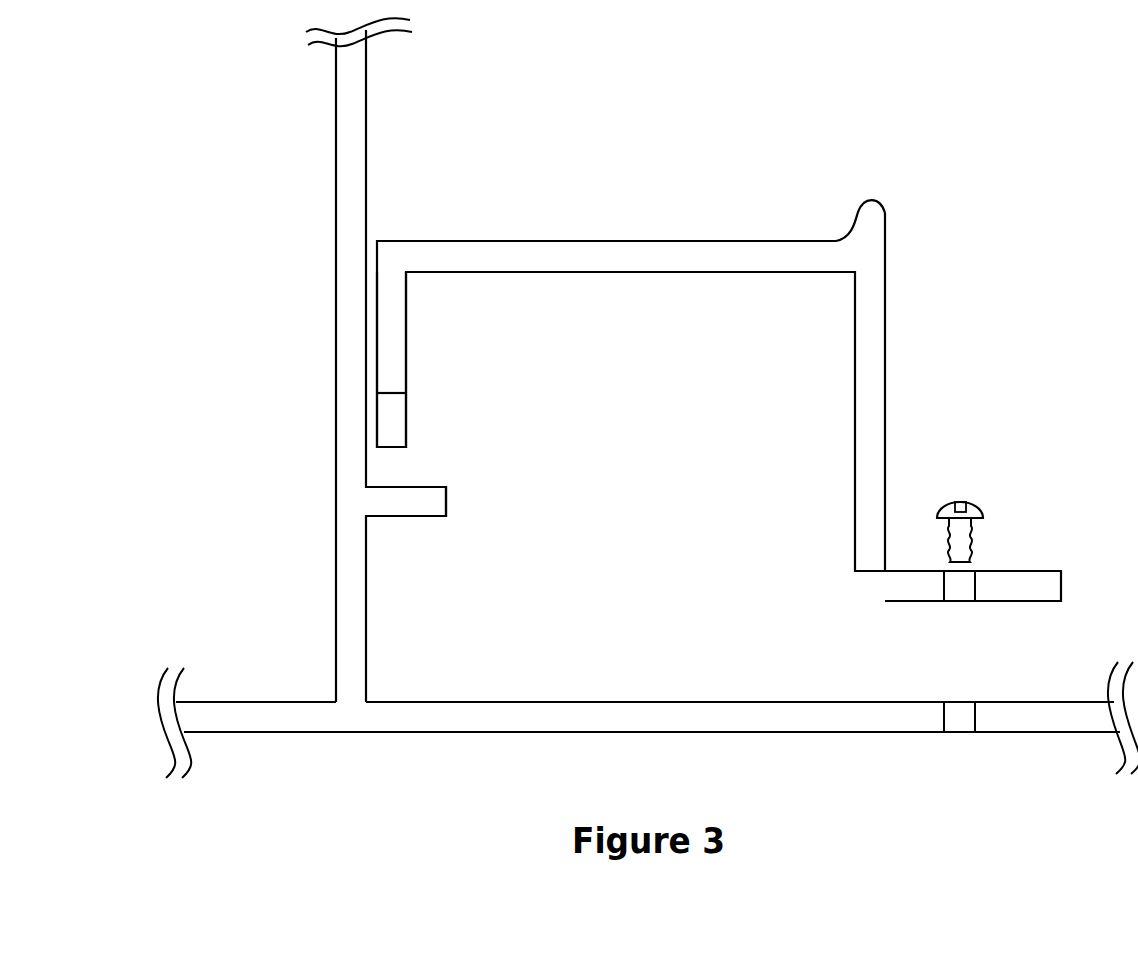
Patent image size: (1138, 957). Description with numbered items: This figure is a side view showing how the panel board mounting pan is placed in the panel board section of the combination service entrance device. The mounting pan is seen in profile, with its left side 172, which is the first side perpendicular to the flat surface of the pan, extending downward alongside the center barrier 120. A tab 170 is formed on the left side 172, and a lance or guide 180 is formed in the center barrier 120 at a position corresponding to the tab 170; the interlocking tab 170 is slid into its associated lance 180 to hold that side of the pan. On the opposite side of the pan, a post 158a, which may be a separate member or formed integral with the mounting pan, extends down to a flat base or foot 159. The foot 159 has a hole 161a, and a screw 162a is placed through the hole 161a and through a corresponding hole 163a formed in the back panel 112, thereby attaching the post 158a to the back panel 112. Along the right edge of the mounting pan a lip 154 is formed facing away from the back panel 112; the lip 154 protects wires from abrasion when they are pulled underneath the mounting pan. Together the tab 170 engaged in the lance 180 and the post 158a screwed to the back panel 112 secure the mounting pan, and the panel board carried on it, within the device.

The back panel 112 is at (426, 701).
The center barrier 120 is at (351, 140).
The lip 154 is at (877, 200).
The post 158a is at (886, 343).
The flat base or foot 159 is at (1031, 571).
The hole 161a is at (962, 590).
The screw 162a is at (970, 510).
The hole 163a is at (961, 715).
The tab 170 is at (407, 423).
The left side 172 is at (406, 345).
The lance or guide 180 is at (420, 505).